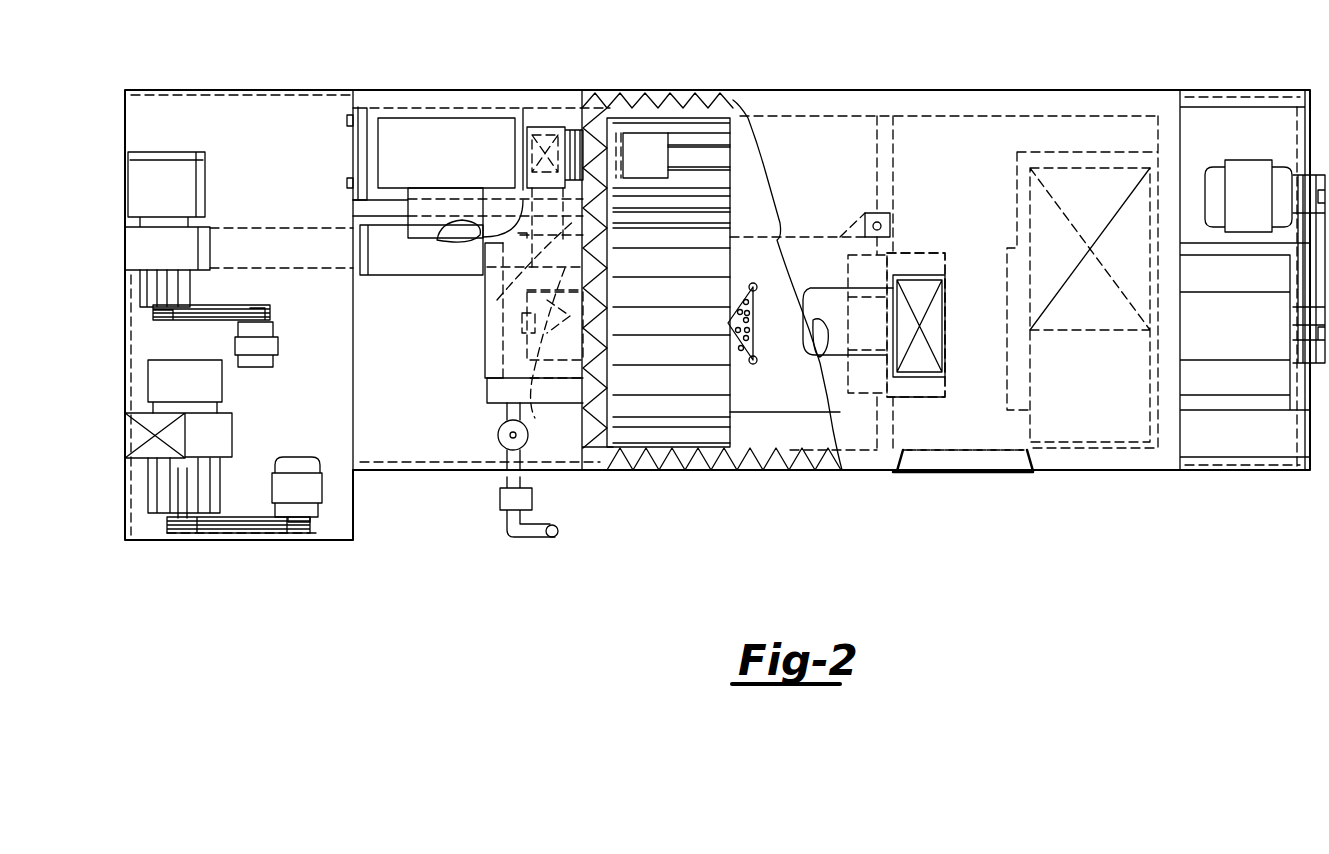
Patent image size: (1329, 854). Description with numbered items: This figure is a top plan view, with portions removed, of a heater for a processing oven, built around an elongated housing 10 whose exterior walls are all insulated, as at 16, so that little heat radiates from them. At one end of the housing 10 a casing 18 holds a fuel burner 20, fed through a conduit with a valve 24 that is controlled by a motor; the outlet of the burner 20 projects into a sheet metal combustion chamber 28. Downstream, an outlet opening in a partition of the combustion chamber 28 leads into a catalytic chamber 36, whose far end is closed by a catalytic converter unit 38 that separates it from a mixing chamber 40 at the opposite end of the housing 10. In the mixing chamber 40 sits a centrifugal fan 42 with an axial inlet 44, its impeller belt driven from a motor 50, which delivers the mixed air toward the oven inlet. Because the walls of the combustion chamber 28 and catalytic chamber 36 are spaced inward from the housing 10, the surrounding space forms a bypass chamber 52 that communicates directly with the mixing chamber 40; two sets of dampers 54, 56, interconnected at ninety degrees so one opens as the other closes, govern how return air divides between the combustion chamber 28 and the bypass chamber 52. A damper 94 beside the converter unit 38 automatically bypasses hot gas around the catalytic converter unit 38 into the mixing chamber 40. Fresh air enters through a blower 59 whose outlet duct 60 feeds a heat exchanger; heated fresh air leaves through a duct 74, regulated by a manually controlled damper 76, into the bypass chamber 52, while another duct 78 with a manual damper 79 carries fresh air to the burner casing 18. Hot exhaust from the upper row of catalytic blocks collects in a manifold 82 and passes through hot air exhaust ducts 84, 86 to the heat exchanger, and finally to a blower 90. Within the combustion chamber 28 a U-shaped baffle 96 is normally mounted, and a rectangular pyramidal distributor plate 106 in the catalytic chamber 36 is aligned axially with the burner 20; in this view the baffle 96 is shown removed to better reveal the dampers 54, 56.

The housing 10 is at (1105, 470).
The insulation 16 is at (677, 457).
The casing 18 is at (487, 392).
The fuel burner 20 is at (540, 327).
The valve 24 is at (498, 435).
The combustion chamber 28 is at (698, 293).
The catalytic chamber 36 is at (803, 402).
The catalytic converter unit 38 is at (862, 280).
The mixing chamber 40 is at (995, 155).
The centrifugal fan 42 is at (1090, 210).
The axial inlet 44 is at (1013, 375).
The motor 50 is at (1278, 128).
The bypass chamber 52 is at (743, 170).
The dampers 54 is at (643, 287).
The dampers 56 is at (700, 155).
The blower 59 is at (185, 235).
The duct 60 is at (383, 275).
The duct 74 is at (633, 135).
The manually controlled damper 76 is at (627, 157).
The duct 78 is at (478, 303).
The manual damper 79 is at (483, 260).
The manifold 82 is at (942, 260).
The hot air exhaust duct 84 is at (935, 320).
The hot air exhaust duct 86 is at (463, 128).
The blower 90 is at (222, 425).
The damper 94 is at (888, 222).
The baffle 96 is at (712, 223).
The distributor plate 106 is at (753, 323).